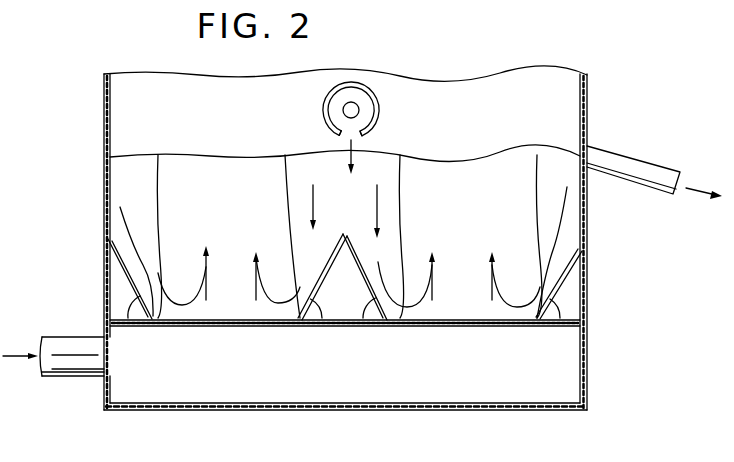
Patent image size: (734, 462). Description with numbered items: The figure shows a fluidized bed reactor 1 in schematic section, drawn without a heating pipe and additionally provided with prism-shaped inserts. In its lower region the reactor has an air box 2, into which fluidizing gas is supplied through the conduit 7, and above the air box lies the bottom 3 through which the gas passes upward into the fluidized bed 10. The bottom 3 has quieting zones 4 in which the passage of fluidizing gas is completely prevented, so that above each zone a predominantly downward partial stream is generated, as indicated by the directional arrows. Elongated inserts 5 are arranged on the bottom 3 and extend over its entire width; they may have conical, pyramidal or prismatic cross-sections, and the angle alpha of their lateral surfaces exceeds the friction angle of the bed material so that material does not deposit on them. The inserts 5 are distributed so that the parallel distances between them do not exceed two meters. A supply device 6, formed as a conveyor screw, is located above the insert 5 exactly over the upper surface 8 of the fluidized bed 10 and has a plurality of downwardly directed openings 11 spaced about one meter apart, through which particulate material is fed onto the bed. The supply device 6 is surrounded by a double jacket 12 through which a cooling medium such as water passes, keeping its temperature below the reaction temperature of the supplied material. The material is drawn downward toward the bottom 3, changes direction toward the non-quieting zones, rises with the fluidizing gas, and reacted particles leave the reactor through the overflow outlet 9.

The fluidized bed reactor 1 is at (588, 302).
The air box 2 is at (123, 339).
The bottom 3 is at (453, 330).
The quieting zones 4 is at (322, 330).
The elongated inserts 5 is at (125, 263).
The supply device 6 is at (353, 92).
The conduit 7 is at (77, 363).
The upper surface 8 is at (176, 155).
The overflow outlet 9 is at (645, 166).
The fluidized bed 10 is at (443, 206).
The downwardly directed openings 11 is at (366, 143).
The double jacket 12 is at (359, 107).